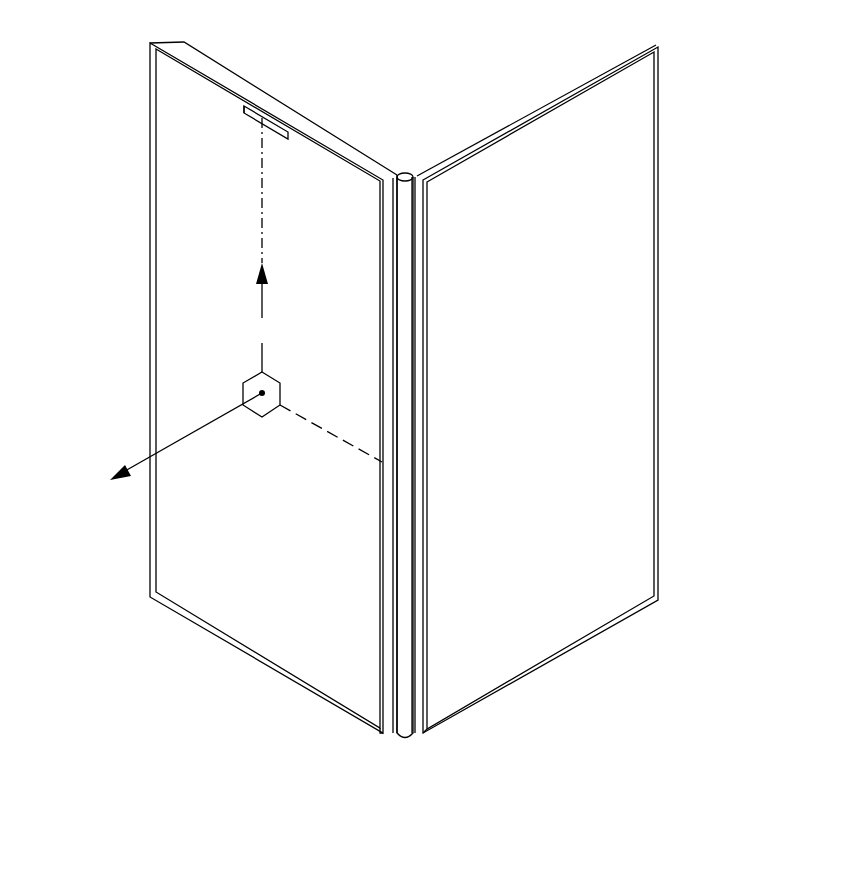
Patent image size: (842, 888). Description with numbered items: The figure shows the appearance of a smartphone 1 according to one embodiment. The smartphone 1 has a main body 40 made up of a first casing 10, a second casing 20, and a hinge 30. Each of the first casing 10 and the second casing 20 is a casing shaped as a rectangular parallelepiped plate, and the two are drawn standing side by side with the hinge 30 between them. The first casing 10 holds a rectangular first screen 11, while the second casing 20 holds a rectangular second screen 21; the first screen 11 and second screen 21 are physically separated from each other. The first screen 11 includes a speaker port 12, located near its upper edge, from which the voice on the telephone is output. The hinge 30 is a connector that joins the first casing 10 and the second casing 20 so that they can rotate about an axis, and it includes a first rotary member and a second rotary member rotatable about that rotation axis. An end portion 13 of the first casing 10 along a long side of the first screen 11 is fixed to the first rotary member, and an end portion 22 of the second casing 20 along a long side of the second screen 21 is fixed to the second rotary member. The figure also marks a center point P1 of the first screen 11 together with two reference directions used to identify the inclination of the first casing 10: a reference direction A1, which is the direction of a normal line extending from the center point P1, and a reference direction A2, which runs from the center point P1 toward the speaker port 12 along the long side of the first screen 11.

The smartphone 1 is at (700, 120).
The main body 40 is at (338, 43).
The first casing 10 is at (328, 135).
The first screen 11 is at (165, 246).
The speaker port 12 is at (247, 106).
The end portion 13 is at (385, 735).
The second casing 20 is at (499, 132).
The second screen 21 is at (640, 258).
The end portion 22 is at (408, 738).
The hinge 30 is at (407, 175).
The center point P1 is at (267, 393).
The reference direction A1 is at (224, 449).
The reference direction A2 is at (260, 245).